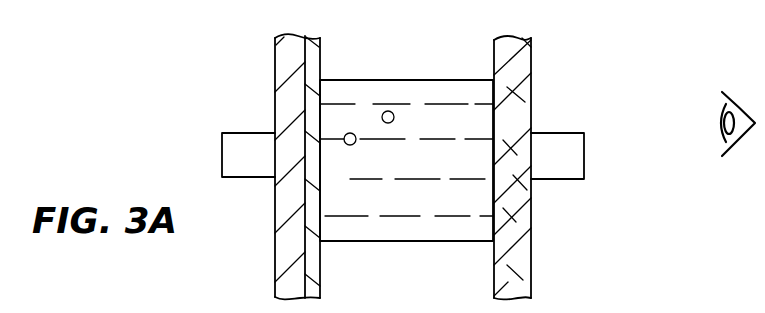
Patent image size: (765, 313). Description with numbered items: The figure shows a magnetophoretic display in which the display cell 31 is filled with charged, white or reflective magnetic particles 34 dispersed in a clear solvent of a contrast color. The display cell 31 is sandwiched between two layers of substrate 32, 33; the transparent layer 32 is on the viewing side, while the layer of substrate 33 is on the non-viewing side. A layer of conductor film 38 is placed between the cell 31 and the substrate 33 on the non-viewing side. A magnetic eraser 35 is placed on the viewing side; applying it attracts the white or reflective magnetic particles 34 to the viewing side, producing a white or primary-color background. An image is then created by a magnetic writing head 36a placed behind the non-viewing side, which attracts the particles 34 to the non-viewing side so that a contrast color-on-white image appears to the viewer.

The display cell 31 is at (447, 242).
The transparent layer of substrate 32 is at (532, 272).
The layer of substrate 33 is at (275, 266).
The magnetic particles 34 is at (388, 110).
The magnetic eraser 35 is at (585, 148).
The magnetic writing head 36a is at (221, 147).
The conductor film 38 is at (320, 268).